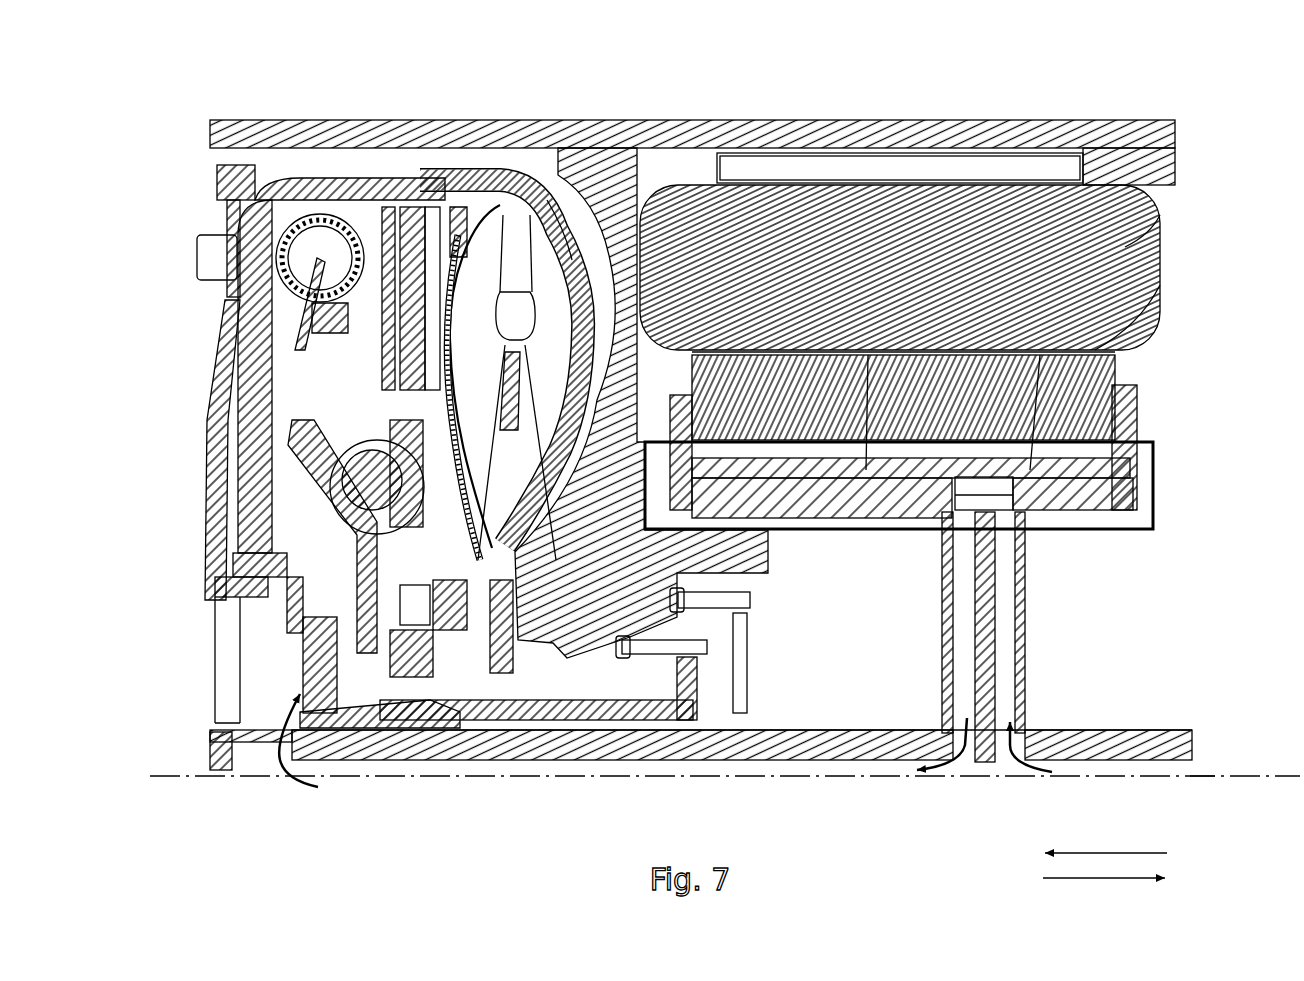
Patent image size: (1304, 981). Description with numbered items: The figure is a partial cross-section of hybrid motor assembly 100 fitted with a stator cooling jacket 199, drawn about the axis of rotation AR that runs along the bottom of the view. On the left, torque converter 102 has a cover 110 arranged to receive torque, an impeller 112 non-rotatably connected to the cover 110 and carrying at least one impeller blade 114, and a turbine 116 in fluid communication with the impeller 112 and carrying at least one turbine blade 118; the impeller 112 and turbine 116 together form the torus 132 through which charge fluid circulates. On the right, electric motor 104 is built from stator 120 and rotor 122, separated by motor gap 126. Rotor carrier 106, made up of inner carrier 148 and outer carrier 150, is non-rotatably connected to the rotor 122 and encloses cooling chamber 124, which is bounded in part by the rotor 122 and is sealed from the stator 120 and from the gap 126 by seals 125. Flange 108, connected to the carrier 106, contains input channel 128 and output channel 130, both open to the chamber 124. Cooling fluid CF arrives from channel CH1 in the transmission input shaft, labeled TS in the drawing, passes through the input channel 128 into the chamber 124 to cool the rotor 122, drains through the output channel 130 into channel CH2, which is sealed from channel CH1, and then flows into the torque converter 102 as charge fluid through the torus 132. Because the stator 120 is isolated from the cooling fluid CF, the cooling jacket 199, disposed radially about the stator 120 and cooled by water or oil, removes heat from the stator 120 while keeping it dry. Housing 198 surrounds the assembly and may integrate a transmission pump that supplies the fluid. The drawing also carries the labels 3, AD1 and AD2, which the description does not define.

The hybrid motor assembly 100 is at (1202, 68).
The torque converter 102 is at (403, 170).
The electric motor 104 is at (935, 199).
The rotor carrier 106 is at (1146, 392).
The flange 108 is at (1034, 580).
The cover 110 is at (258, 178).
The impeller 112 is at (552, 267).
The impeller blade 114 is at (549, 196).
The turbine 116 is at (483, 270).
The turbine blade 118 is at (419, 175).
The stator 120 is at (1137, 240).
The rotor 122 is at (1090, 345).
The cooling chamber 124 is at (868, 355).
The seals 125 is at (1122, 488).
The motor gap 126 is at (780, 350).
The input channel 128 is at (1030, 660).
The output channel 130 is at (944, 637).
The torus 132 is at (630, 205).
The inner carrier 148 is at (1120, 510).
The outer carrier 150 is at (515, 318).
The housing 198 is at (575, 645).
The cooling jacket 199 is at (957, 177).
The frame 3 is at (1155, 478).
The top surface TS is at (1153, 727).
The channel CH1 is at (1163, 766).
The channel CH2 is at (838, 763).
The axis of rotation AR is at (1200, 778).
The first axial direction AD1 is at (1078, 852).
The second axial direction AD2 is at (1103, 880).
The cooling fluid CF is at (292, 785).